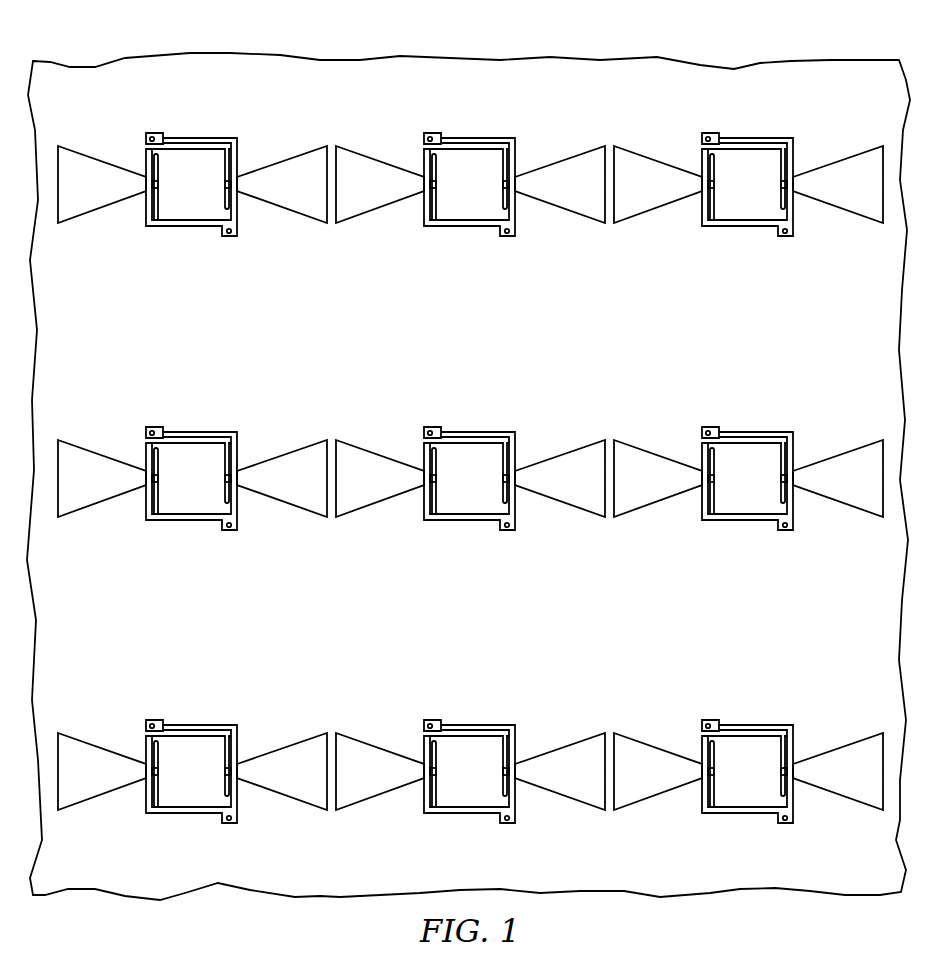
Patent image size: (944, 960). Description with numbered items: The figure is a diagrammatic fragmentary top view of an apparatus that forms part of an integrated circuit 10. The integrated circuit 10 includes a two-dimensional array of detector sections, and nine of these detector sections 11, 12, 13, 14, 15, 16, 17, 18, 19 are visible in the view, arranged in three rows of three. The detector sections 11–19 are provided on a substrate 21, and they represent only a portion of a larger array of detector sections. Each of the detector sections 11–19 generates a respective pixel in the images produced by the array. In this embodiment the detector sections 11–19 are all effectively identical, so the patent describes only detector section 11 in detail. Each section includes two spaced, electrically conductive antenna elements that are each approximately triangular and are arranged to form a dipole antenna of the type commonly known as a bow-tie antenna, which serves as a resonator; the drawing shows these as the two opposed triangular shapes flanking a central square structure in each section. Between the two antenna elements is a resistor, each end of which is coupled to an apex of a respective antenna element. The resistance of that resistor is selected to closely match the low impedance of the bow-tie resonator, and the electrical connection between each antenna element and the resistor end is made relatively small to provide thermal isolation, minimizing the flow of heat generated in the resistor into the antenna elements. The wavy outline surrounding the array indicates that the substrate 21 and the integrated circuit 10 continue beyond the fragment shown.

The integrated circuit 10 is at (718, 50).
The substrate 21 is at (136, 70).
The detector section 11 is at (192, 155).
The detector section 12 is at (470, 155).
The detector section 13 is at (748, 155).
The detector section 14 is at (192, 449).
The detector section 15 is at (470, 449).
The detector section 16 is at (748, 449).
The detector section 17 is at (192, 742).
The detector section 18 is at (470, 742).
The detector section 19 is at (748, 742).